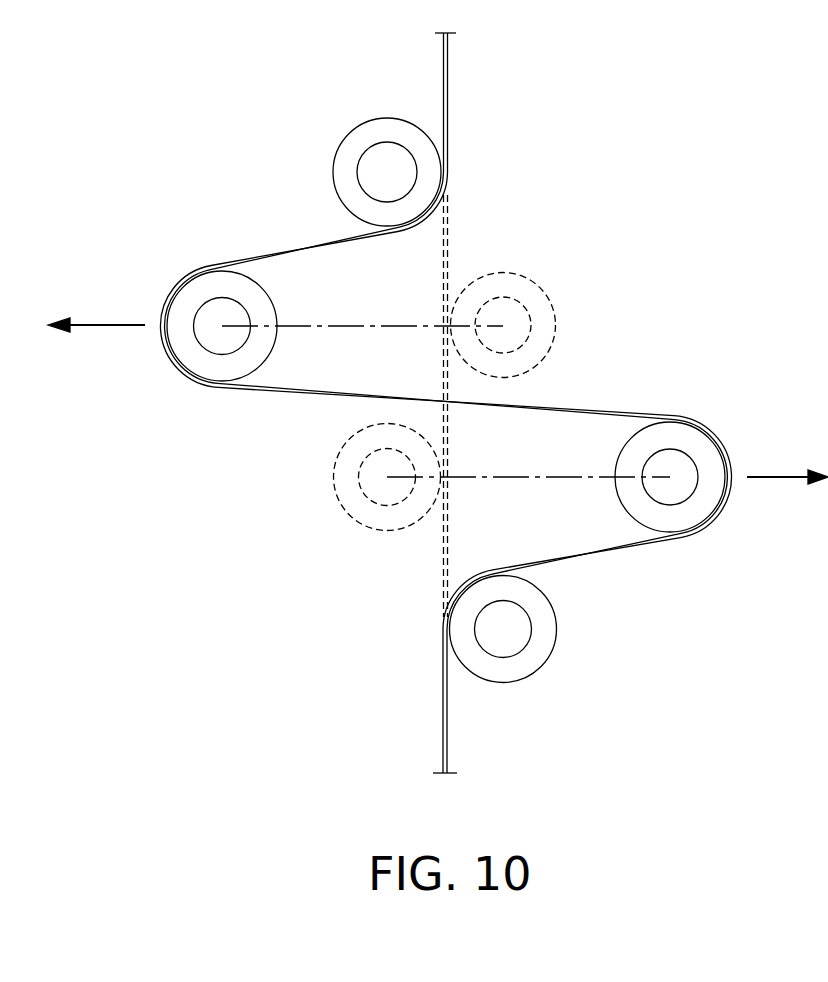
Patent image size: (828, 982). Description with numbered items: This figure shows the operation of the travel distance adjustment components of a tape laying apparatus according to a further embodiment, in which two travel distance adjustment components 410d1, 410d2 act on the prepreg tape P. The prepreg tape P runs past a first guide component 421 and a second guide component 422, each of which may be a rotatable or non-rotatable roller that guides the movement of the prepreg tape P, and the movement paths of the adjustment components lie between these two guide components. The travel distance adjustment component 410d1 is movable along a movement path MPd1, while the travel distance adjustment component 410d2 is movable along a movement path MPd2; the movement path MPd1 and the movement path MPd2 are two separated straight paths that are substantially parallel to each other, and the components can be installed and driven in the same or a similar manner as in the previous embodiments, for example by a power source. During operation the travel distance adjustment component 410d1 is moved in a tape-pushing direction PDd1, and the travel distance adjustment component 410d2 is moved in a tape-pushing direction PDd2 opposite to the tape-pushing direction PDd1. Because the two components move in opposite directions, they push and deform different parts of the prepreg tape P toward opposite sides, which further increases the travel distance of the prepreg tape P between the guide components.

The prepreg tape P is at (449, 75).
The first guide component 421 is at (342, 172).
The second guide component 422 is at (547, 628).
The travel distance adjustment component 410d1 is at (205, 292).
The travel distance adjustment component 410d2 is at (365, 513).
The movement path MPd1 is at (362, 325).
The movement path MPd2 is at (527, 478).
The tape-pushing direction PDd1 is at (96, 339).
The tape-pushing direction PDd2 is at (787, 491).